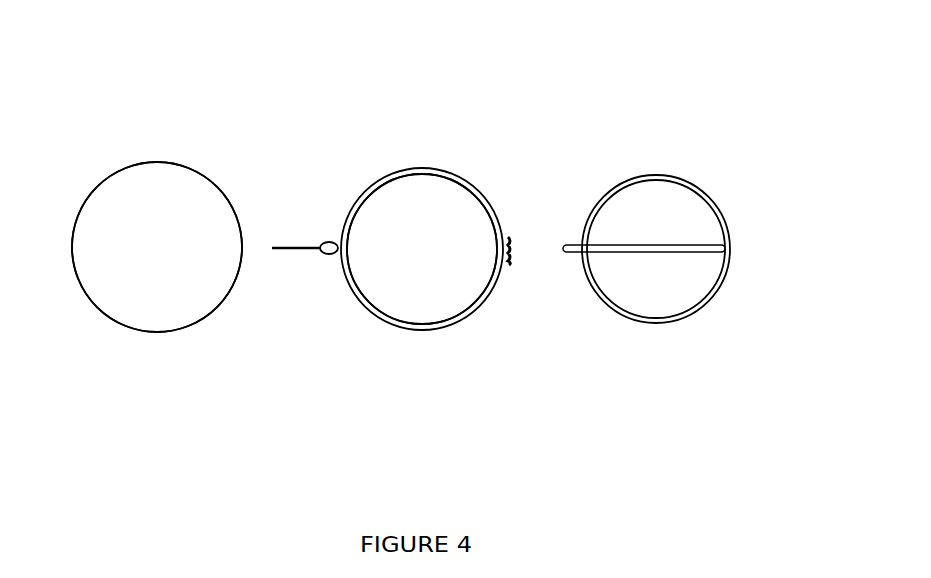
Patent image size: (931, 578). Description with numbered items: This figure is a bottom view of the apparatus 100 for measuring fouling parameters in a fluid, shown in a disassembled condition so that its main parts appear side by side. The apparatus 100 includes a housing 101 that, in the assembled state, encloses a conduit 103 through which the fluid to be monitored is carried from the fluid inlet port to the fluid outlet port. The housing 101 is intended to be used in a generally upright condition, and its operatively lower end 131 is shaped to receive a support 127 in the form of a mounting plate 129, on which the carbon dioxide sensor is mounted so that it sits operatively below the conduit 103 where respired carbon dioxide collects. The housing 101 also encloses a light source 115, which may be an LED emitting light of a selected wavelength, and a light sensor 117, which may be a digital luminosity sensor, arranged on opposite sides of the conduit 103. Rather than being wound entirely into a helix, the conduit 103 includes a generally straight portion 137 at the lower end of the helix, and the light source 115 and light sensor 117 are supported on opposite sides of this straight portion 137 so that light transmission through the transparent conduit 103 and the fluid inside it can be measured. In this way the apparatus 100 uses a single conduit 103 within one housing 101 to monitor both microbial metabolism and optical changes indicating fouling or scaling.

The apparatus 100 is at (172, 102).
The housing 101 is at (100, 192).
The operatively lower end 131 is at (137, 295).
The mounting plate 129 is at (428, 305).
The support 127 is at (433, 280).
The light source 115 is at (325, 245).
The light sensor 117 is at (511, 238).
The conduit 103 is at (673, 180).
The straight portion 137 is at (702, 250).